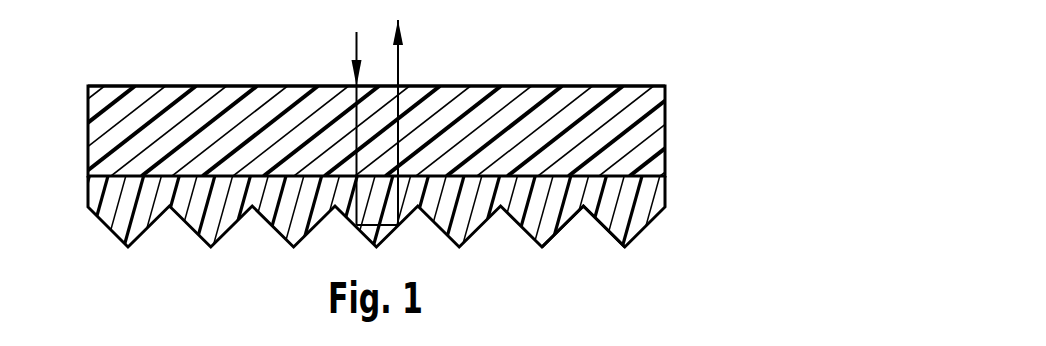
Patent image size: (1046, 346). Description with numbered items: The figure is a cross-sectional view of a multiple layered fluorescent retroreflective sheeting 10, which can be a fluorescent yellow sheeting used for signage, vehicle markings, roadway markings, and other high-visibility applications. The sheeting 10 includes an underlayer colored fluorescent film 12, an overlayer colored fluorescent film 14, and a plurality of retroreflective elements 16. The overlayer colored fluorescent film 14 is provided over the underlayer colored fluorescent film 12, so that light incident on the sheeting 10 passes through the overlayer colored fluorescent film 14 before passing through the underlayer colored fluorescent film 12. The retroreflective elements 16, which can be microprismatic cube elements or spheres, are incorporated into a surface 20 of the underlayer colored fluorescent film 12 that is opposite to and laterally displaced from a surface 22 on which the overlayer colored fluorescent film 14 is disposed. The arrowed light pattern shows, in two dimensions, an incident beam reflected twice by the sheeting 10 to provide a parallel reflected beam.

The fluorescent retroreflective sheeting 10 is at (655, 44).
The underlayer colored fluorescent film 12 is at (88, 192).
The overlayer colored fluorescent film 14 is at (583, 86).
The retroreflective elements 16 is at (203, 238).
The surface 20 is at (560, 228).
The surface 22 is at (666, 150).